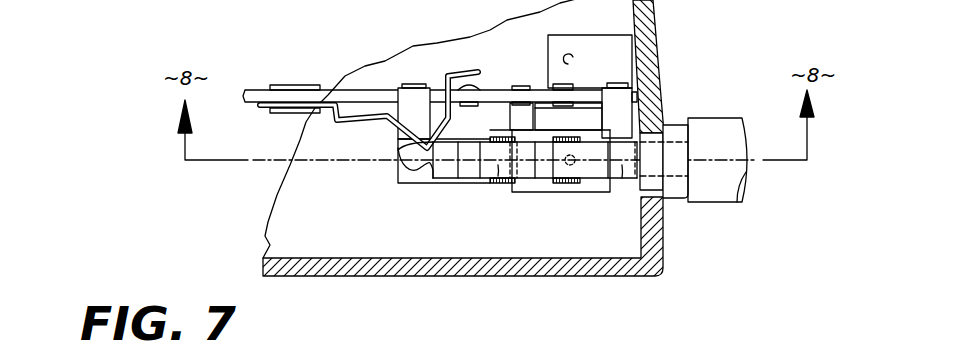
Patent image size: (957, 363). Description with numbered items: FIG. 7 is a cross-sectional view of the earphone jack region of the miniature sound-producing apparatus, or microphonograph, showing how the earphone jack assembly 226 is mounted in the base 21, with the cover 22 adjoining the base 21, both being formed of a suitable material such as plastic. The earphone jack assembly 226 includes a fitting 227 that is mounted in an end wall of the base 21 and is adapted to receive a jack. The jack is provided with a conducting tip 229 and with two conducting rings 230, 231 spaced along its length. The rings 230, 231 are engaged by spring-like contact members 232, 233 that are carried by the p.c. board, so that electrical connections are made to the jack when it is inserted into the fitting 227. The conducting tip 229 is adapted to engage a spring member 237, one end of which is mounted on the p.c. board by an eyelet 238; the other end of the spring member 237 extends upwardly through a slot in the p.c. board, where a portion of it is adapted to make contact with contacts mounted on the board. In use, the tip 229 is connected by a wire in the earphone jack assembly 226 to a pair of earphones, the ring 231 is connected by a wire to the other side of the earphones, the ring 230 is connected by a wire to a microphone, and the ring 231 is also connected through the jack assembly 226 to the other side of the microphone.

The base 21 is at (607, 284).
The cover 22 is at (664, 25).
The earphone jack assembly 226 is at (705, 203).
The fitting 227 is at (672, 126).
The conducting tip 229 is at (398, 176).
The conducting ring 230 is at (500, 165).
The conducting ring 231 is at (622, 163).
The spring-like contact member 232 is at (577, 180).
The spring-like contact member 233 is at (433, 183).
The spring member 237 is at (383, 120).
The eyelet 238 is at (307, 85).